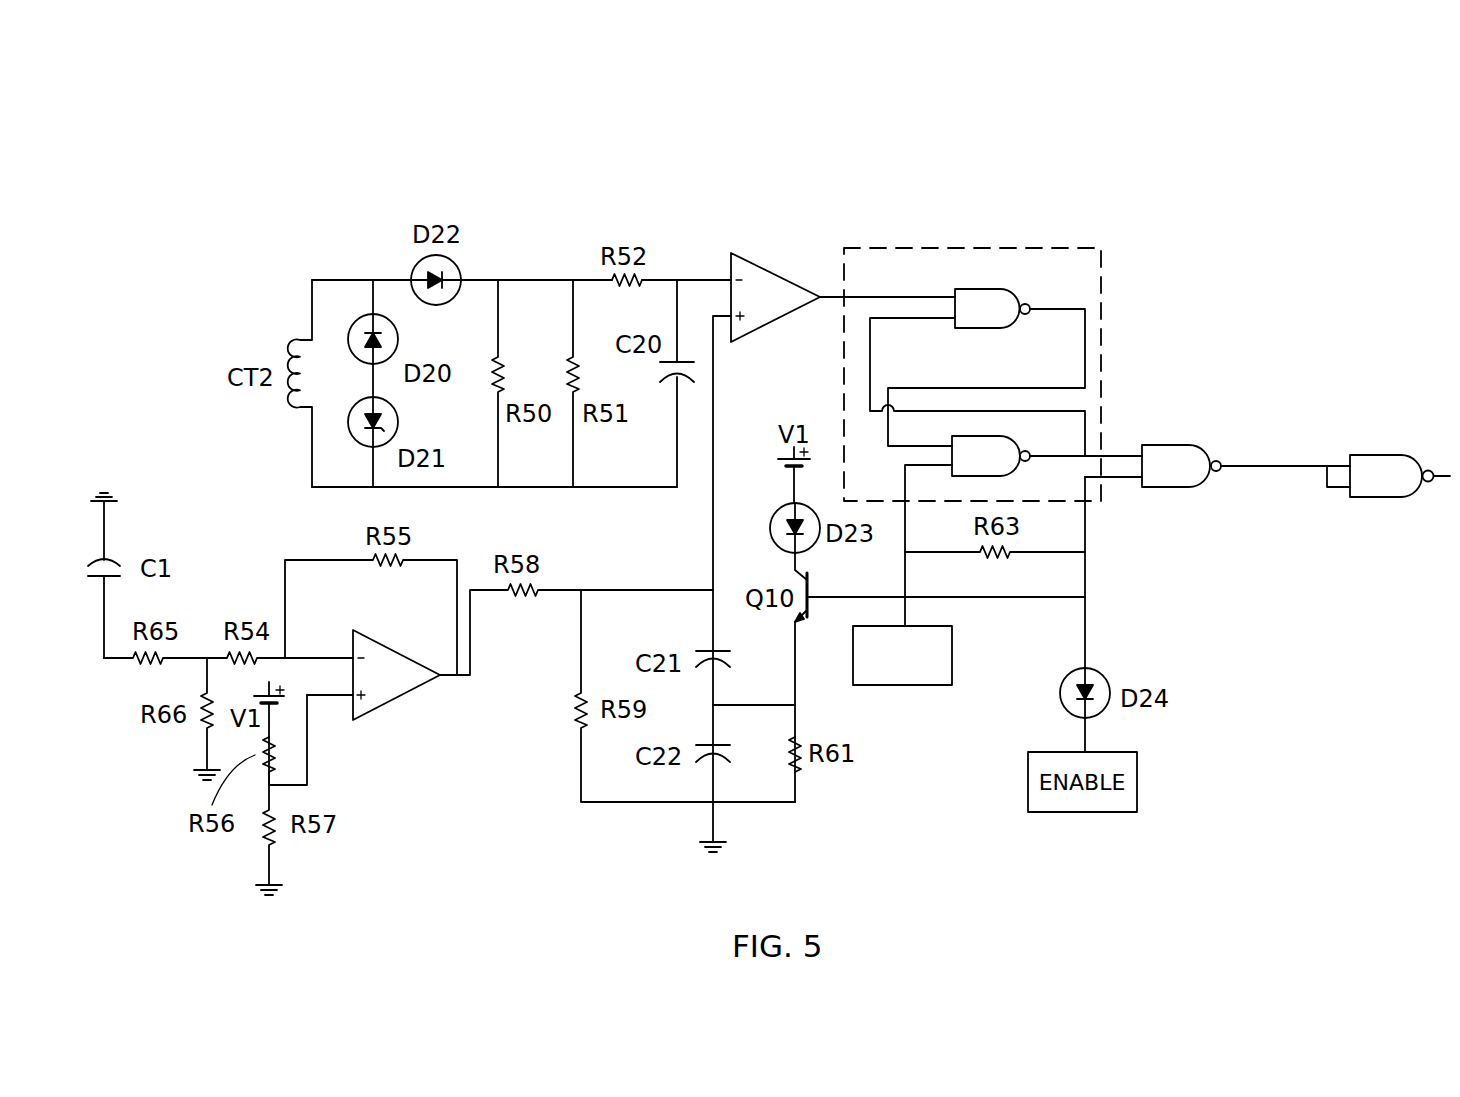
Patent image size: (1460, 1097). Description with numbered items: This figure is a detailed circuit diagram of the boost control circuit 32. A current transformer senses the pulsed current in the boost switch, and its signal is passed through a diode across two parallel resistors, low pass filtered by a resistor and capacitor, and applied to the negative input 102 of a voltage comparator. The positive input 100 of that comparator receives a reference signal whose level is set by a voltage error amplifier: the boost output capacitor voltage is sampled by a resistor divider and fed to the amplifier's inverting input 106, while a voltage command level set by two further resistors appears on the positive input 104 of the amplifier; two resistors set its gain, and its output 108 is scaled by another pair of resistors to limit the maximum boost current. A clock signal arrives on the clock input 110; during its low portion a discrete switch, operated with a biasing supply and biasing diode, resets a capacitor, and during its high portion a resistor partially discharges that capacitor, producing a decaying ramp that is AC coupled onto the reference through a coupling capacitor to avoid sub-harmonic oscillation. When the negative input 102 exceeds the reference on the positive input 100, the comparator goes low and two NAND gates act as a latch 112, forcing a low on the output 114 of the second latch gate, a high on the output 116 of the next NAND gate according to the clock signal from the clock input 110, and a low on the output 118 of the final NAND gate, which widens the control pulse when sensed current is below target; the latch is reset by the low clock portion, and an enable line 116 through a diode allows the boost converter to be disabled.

The boost control circuit 32 is at (648, 156).
The positive input of voltage comparator U2 100 is at (727, 318).
The negative input of voltage comparator U2 102 is at (727, 278).
The positive input of voltage error amplifier U4 104 is at (350, 700).
The inverting input of amplifier U4 106 is at (350, 653).
The output of voltage error amplifier U4 108 is at (448, 678).
The clock input 110 is at (903, 687).
The latch 112 is at (978, 248).
The output of NAND gate U7B 114 is at (1115, 450).
The output of NAND gate U7C 116 is at (1228, 465).
The output of NAND gate U7D 118 is at (1447, 472).